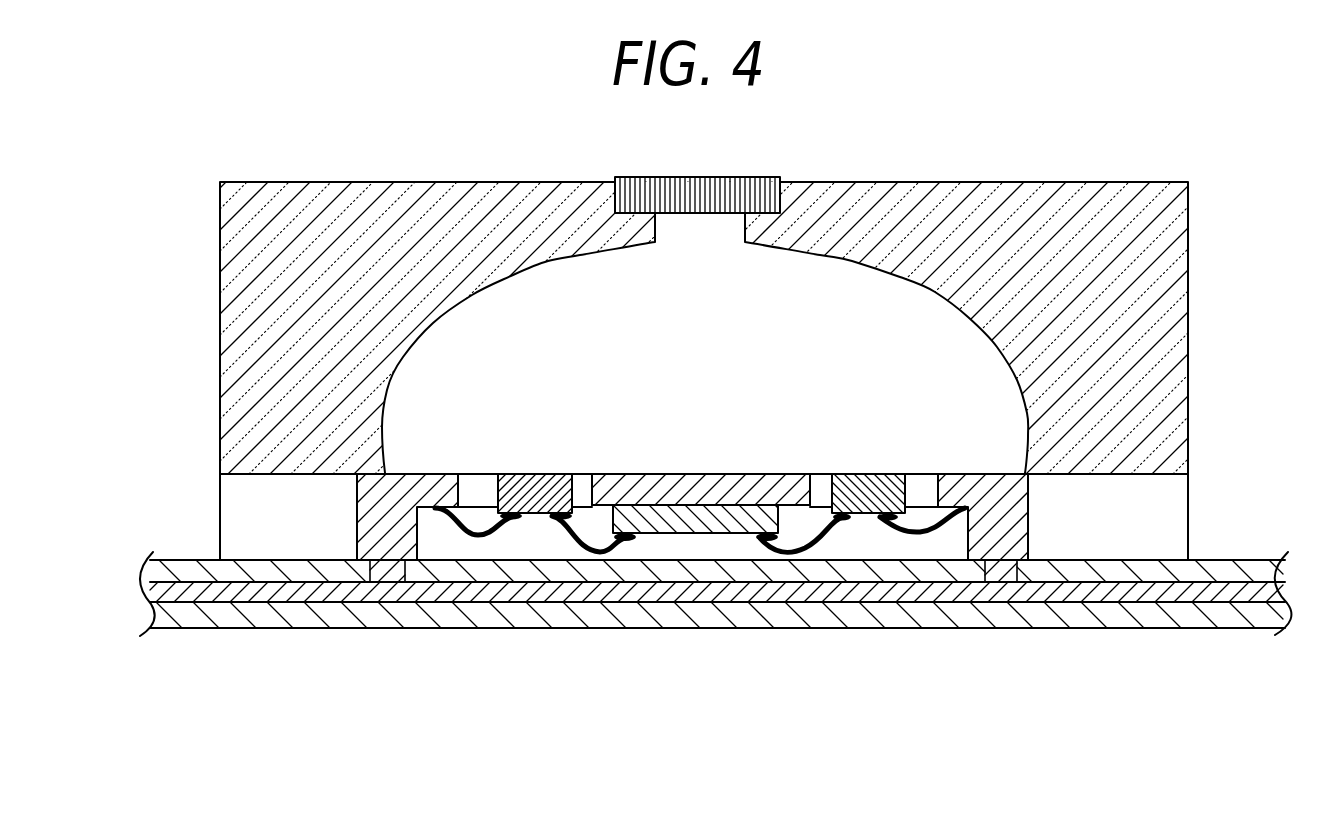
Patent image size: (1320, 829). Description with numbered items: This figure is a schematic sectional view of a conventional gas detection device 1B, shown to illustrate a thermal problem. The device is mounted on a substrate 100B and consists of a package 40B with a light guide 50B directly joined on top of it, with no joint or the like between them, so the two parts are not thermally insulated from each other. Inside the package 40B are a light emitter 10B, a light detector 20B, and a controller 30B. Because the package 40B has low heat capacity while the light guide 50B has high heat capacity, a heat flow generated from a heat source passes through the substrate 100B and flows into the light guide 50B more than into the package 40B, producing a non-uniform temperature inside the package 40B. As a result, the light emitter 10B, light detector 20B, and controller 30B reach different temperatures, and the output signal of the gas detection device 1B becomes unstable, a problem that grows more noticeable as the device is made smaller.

The gas detection device 1B is at (127, 172).
The light emitter 10B is at (542, 500).
The light detector 20B is at (870, 498).
The controller 30B is at (705, 522).
The package 40B is at (1209, 476).
The light guide 50B is at (1209, 182).
The substrate 100B is at (1238, 617).